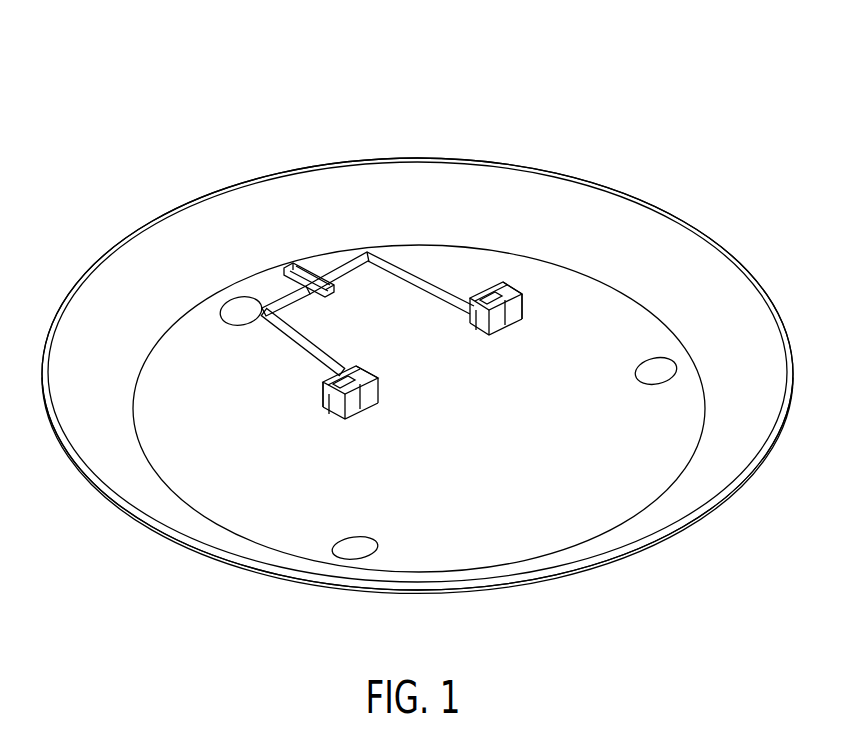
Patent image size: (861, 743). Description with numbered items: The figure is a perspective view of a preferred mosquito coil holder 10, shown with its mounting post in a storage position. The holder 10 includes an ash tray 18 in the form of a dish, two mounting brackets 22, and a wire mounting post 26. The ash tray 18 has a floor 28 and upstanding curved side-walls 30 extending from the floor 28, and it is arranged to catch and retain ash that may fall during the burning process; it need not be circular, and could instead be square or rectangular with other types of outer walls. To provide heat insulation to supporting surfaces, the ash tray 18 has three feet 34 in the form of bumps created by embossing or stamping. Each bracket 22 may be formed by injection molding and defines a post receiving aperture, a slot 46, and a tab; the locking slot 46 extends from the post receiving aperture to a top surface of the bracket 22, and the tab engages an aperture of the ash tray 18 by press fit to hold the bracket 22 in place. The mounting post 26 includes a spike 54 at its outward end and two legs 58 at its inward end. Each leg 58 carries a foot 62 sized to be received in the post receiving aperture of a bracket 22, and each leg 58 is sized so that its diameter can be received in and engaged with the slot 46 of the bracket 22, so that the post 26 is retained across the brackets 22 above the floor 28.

The holder 10 is at (637, 57).
The ash tray 18 is at (697, 260).
The side-walls 30 is at (757, 317).
The floor 28 is at (516, 450).
The feet 34 is at (238, 316).
The wire mounting post 26 is at (403, 278).
The legs 58 is at (297, 343).
The spike 54 is at (290, 270).
The mounting brackets 22 is at (513, 326).
The slot 46 is at (480, 293).
The foot 62 is at (523, 303).